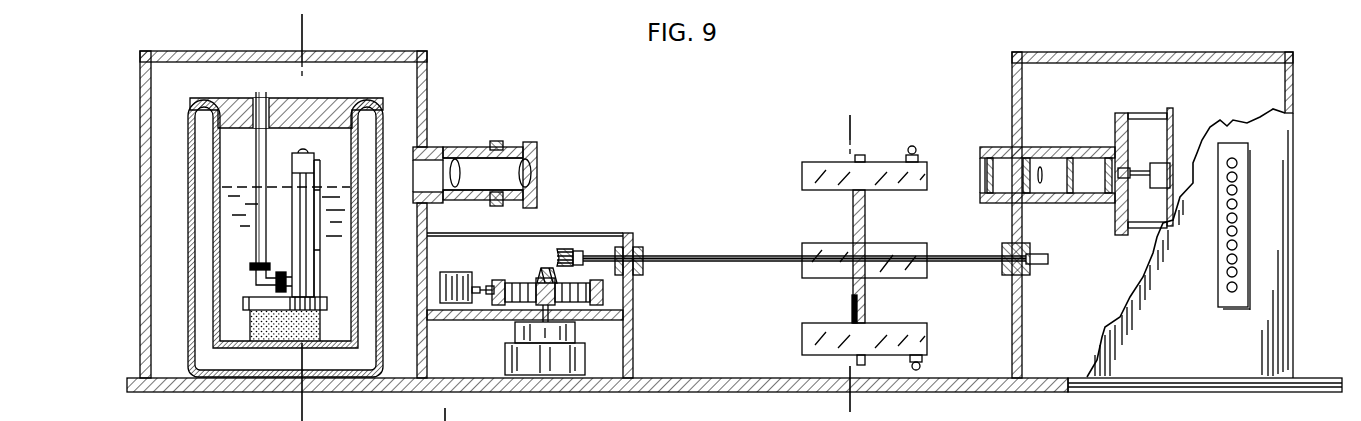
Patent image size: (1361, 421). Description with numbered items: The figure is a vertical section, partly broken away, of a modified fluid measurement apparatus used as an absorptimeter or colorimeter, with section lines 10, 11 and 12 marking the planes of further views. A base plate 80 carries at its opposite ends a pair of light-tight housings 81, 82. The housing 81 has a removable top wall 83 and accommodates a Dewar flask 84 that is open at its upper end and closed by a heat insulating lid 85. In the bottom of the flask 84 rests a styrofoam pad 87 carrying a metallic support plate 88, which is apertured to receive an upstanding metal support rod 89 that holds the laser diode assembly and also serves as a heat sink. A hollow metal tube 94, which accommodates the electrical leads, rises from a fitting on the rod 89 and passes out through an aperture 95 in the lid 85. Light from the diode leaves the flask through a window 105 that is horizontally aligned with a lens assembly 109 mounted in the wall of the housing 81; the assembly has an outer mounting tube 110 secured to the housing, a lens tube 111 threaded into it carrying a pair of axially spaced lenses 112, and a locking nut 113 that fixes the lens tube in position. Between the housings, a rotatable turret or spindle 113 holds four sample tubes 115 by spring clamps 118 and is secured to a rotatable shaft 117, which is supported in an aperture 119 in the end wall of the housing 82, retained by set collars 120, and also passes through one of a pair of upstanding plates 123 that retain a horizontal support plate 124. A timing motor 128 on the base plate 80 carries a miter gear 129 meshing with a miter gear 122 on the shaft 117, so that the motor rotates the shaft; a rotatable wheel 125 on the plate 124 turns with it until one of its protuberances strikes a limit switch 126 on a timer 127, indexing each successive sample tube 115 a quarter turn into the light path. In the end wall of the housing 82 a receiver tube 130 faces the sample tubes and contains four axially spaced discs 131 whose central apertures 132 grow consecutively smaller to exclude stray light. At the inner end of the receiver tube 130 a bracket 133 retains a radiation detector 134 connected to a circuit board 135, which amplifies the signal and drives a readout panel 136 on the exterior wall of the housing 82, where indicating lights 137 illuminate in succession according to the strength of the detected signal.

The section line 10- 10 is at (886, 412).
The section line 11- 11 is at (300, 28).
The section line 12- 12 is at (443, 416).
The base plate 80 is at (991, 393).
The light-tight housing 81 is at (314, 197).
The light-tight housing 82 is at (1010, 70).
The removable top wall 83 is at (384, 52).
The Dewar flask 84 is at (232, 232).
The heat insulating lid 85 is at (328, 108).
The styrofoam cushion 87 is at (306, 343).
The metallic support plate 88 is at (243, 304).
The support rod 89 is at (298, 210).
The hollow metal tube 94 is at (256, 172).
The aperture 95 is at (268, 112).
The window 105 is at (190, 142).
The lens assembly 109 is at (478, 145).
The outer mounting tube 110 is at (450, 147).
The lens tube 111 is at (530, 143).
The lenses 112 is at (532, 173).
The rotatable turret 113 is at (500, 142).
The sample tubes 115 is at (802, 162).
The rotatable shaft 117 is at (965, 255).
The spring clamps 118 is at (852, 306).
The aperture 119 is at (1022, 280).
The set collars 120 is at (1031, 246).
The miter gear 122 is at (570, 247).
The upstanding plates 123 is at (632, 233).
The horizontal support plate 124 is at (632, 327).
The rotatable wheel 125 is at (525, 280).
The limit switch 126 is at (480, 272).
The timer 127 is at (470, 292).
The timing motor 128 is at (586, 358).
The miter gear 129 is at (548, 266).
The receiver tube 130 is at (1006, 145).
The discs 131 is at (1066, 148).
The central apertures 132 is at (988, 170).
The bracket 133 is at (1117, 120).
The radiation detector 134 is at (1127, 172).
The circuit board 135 is at (1171, 112).
The readout panel 136 is at (1250, 220).
The indicating lights 137 is at (1236, 200).